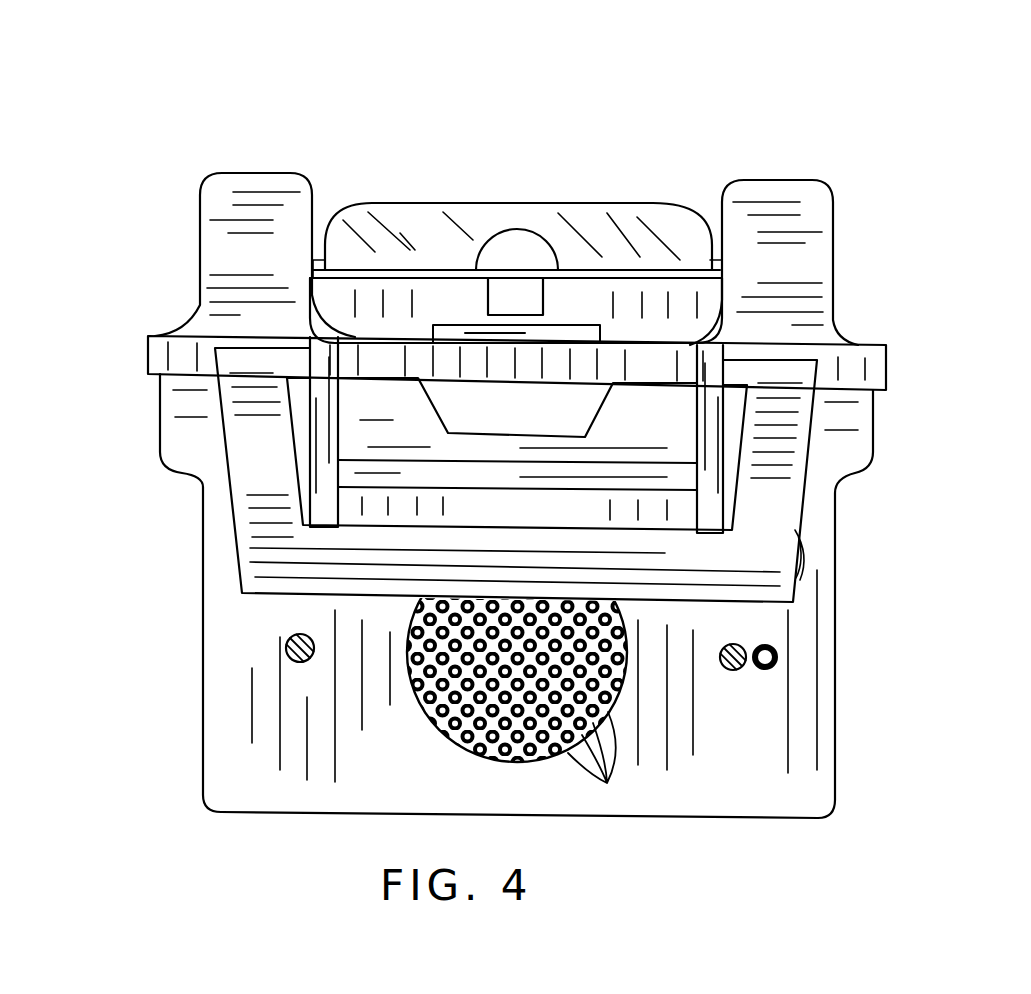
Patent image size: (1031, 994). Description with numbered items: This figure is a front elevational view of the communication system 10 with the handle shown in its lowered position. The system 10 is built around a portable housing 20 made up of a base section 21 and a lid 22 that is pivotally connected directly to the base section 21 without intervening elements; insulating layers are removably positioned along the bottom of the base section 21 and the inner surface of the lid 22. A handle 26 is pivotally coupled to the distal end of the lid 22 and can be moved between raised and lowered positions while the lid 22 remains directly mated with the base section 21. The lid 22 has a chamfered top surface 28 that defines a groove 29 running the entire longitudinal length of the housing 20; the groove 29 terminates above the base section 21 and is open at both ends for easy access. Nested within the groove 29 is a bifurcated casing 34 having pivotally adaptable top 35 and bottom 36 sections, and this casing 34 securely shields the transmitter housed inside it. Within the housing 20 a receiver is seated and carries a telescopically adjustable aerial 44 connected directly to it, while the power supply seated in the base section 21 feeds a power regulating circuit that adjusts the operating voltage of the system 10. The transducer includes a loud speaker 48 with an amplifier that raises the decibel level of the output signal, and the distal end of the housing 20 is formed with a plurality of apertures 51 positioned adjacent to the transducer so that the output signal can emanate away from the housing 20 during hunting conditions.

The system 10 is at (934, 152).
The portable housing 20 is at (530, 643).
The base section 21 is at (828, 772).
The lid 22 is at (878, 360).
The handle 26 is at (793, 500).
The chamfered top surface 28 is at (313, 218).
The groove 29 is at (706, 214).
The bifurcated casing 34 is at (590, 220).
The top section 35 is at (518, 190).
The bottom section 36 is at (372, 292).
The telescopically adjustable aerial 44 is at (778, 657).
The loud speaker 48 is at (538, 762).
The apertures 51 is at (607, 783).